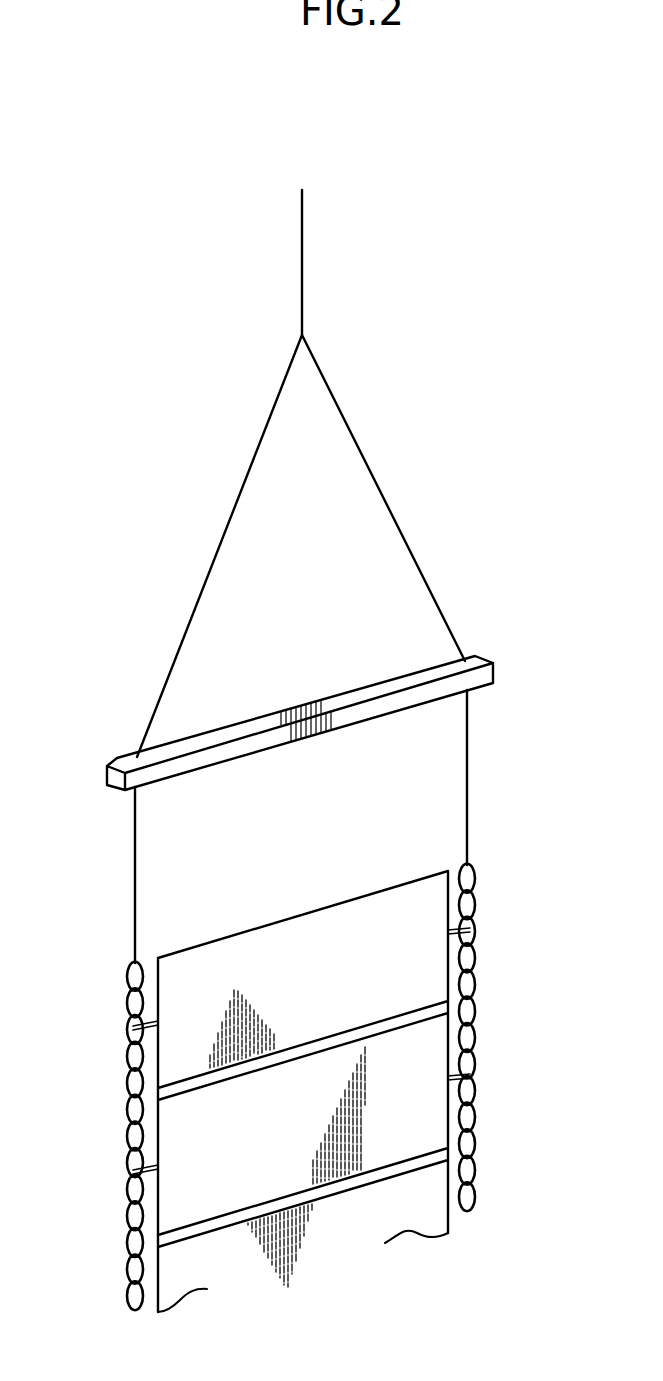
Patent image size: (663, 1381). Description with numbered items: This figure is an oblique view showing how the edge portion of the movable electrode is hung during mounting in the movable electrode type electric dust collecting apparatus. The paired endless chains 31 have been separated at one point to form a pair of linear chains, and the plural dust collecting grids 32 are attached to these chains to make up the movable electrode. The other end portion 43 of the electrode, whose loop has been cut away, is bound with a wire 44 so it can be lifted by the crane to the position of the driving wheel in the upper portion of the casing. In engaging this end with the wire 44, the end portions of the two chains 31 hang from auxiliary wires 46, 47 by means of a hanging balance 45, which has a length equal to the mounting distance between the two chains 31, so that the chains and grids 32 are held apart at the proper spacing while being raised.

The wire 44 is at (302, 240).
The auxiliary wire 46 is at (383, 493).
The hanging balance 45 is at (478, 655).
The auxiliary wire 47 is at (468, 772).
The other end portion 43 is at (472, 868).
The dust collecting grid 32 is at (423, 930).
The endless chain 31 is at (477, 963).